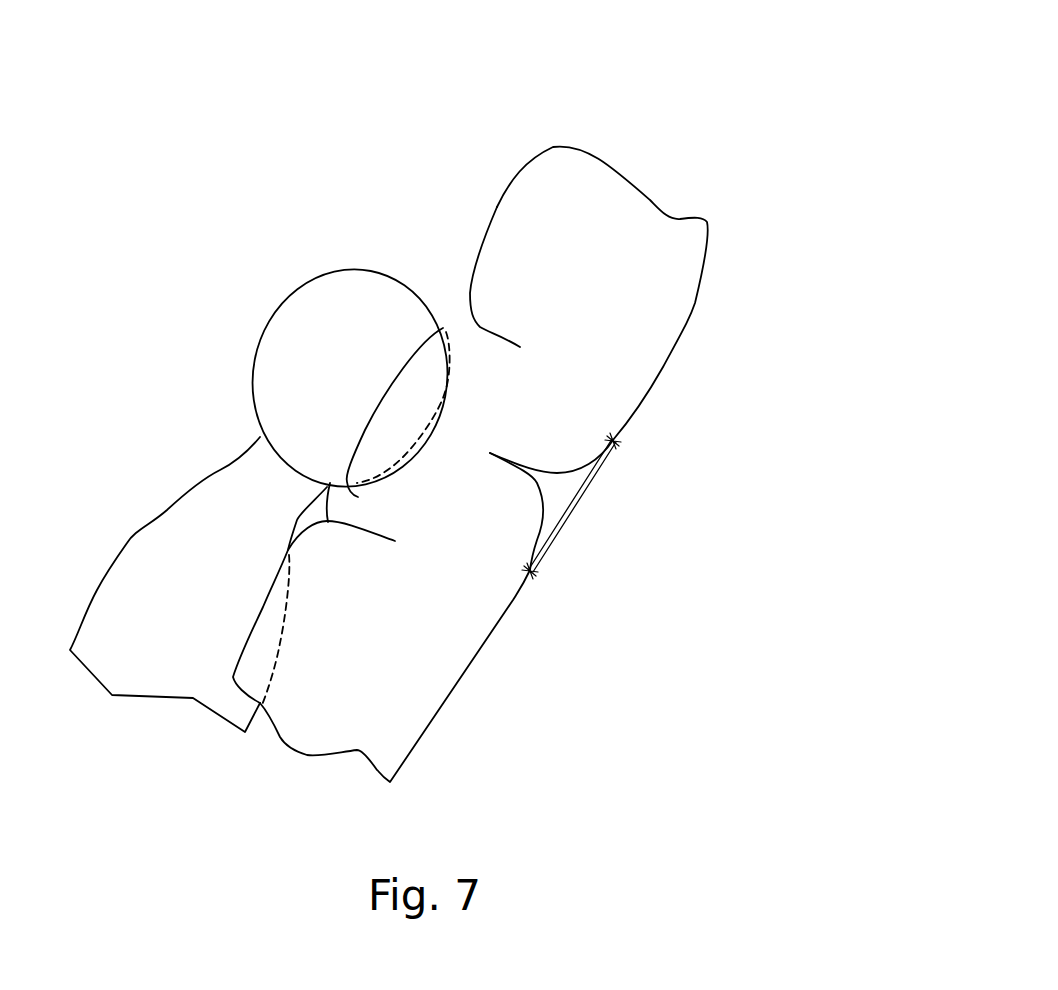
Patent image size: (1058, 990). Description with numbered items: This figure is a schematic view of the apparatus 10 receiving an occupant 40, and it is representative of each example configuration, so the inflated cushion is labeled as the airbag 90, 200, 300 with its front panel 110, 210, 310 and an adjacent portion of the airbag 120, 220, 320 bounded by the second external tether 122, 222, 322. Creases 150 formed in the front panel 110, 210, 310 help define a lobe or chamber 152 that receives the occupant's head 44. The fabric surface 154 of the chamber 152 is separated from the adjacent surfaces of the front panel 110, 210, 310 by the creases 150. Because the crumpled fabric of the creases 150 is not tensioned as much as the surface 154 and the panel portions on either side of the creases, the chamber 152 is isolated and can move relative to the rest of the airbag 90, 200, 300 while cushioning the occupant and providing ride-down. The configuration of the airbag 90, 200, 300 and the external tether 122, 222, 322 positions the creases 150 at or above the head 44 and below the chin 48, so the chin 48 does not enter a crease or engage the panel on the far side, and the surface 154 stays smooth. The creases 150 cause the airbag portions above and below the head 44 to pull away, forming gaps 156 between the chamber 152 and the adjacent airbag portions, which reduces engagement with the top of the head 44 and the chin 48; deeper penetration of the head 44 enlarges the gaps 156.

The joint assembly 10 is at (718, 110).
The first component 40 is at (158, 306).
The occupant's head 44 is at (300, 323).
The occupant's chin 48 is at (328, 525).
The airbag 90 is at (570, 464).
The airbag 200 is at (570, 464).
The airbag 300 is at (670, 302).
The front panel 110 is at (497, 293).
The front panel 210 is at (497, 293).
The front panel 310 is at (497, 208).
The body portion 120 is at (563, 574).
The body portion 220 is at (563, 574).
The body portion 320 is at (665, 367).
The second external tether 122 is at (688, 506).
The second external tether 222 is at (688, 506).
The second external tether 322 is at (583, 492).
The creases 150 is at (443, 328).
The chamber 152 is at (393, 433).
The fabric surface 154 is at (388, 390).
The gaps 156 is at (455, 307).